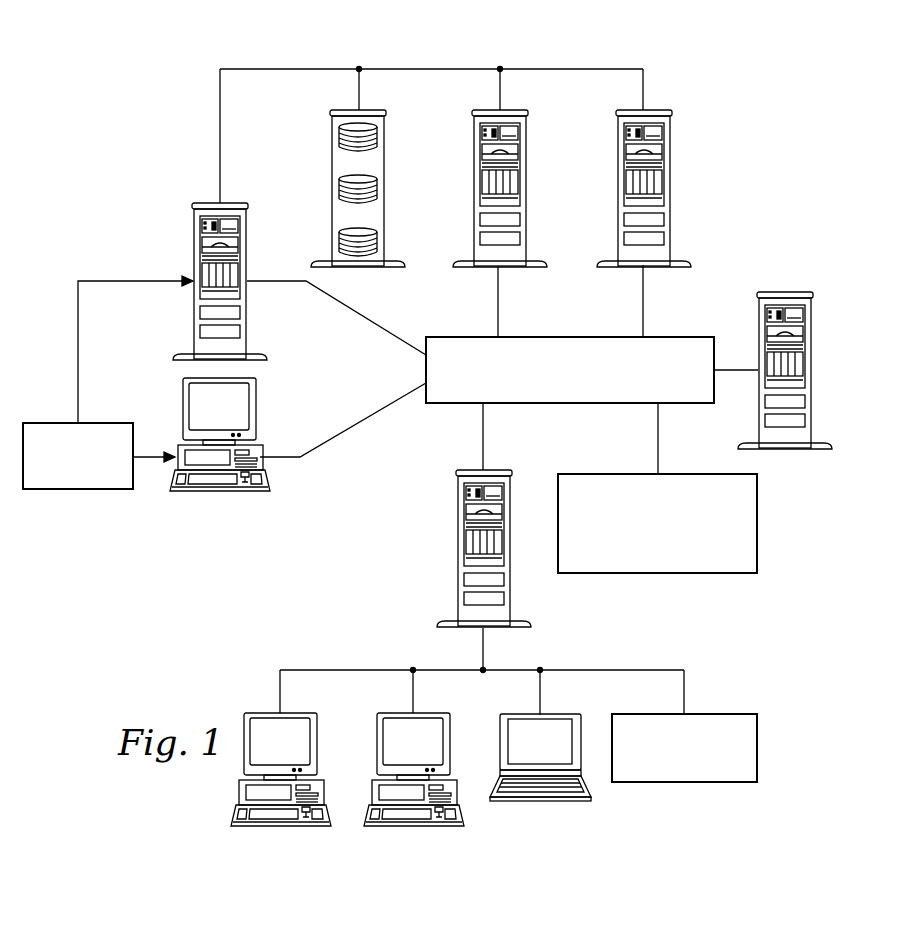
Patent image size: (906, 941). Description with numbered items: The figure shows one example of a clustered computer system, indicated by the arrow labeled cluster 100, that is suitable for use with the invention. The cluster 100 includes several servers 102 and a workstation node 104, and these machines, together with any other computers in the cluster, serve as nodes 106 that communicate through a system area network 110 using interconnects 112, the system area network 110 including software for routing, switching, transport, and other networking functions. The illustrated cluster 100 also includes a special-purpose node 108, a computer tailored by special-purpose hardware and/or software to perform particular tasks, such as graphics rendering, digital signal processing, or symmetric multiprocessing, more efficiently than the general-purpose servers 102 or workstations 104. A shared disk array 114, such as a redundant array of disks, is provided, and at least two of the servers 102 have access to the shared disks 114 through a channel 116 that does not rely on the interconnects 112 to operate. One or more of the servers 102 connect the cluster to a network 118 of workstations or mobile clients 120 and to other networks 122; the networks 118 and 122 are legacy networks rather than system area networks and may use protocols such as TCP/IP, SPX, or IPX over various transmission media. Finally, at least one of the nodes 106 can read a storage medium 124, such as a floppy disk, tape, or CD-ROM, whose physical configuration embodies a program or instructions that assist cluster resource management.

The cluster 100 is at (806, 132).
The server 102 is at (477, 368).
The workstation node 104 is at (206, 490).
The node 106 is at (193, 240).
The special-purpose node 108 is at (757, 525).
The system area network 110 is at (578, 403).
The interconnect 112 is at (498, 312).
The shared disk array 114 is at (332, 190).
The channel 116 is at (430, 69).
The network 118 is at (612, 670).
The mobile client 120 is at (268, 826).
The other network 122 is at (697, 782).
The storage medium 124 is at (65, 489).